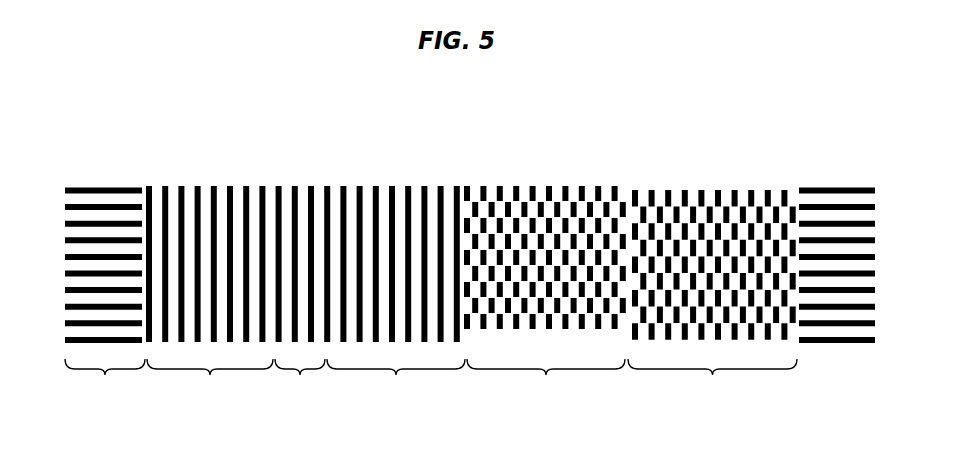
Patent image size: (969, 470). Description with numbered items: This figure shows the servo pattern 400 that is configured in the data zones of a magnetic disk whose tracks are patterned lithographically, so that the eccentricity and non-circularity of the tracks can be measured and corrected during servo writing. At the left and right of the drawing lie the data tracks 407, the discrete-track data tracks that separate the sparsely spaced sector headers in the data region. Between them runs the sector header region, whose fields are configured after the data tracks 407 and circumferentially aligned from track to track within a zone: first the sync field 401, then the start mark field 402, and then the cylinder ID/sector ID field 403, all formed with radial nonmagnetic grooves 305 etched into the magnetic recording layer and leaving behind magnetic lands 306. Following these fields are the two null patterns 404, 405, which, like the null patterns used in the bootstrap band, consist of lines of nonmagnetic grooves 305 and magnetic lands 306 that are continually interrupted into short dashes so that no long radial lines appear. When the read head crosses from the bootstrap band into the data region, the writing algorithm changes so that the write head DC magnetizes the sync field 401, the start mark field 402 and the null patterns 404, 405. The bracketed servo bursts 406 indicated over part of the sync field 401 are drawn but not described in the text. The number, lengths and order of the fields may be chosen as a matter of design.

The servo pattern 400 is at (244, 98).
The data tracks 407 is at (105, 319).
The sync field 401 is at (209, 288).
The sync field servo bursts 406 is at (273, 187).
The start mark field 402 is at (296, 306).
The cylinder ID/sector ID field 403 is at (394, 318).
The null pattern 404 is at (544, 283).
The null pattern 405 is at (712, 308).
The magnetic lands 306 is at (548, 207).
The nonmagnetic grooves 305 is at (699, 208).